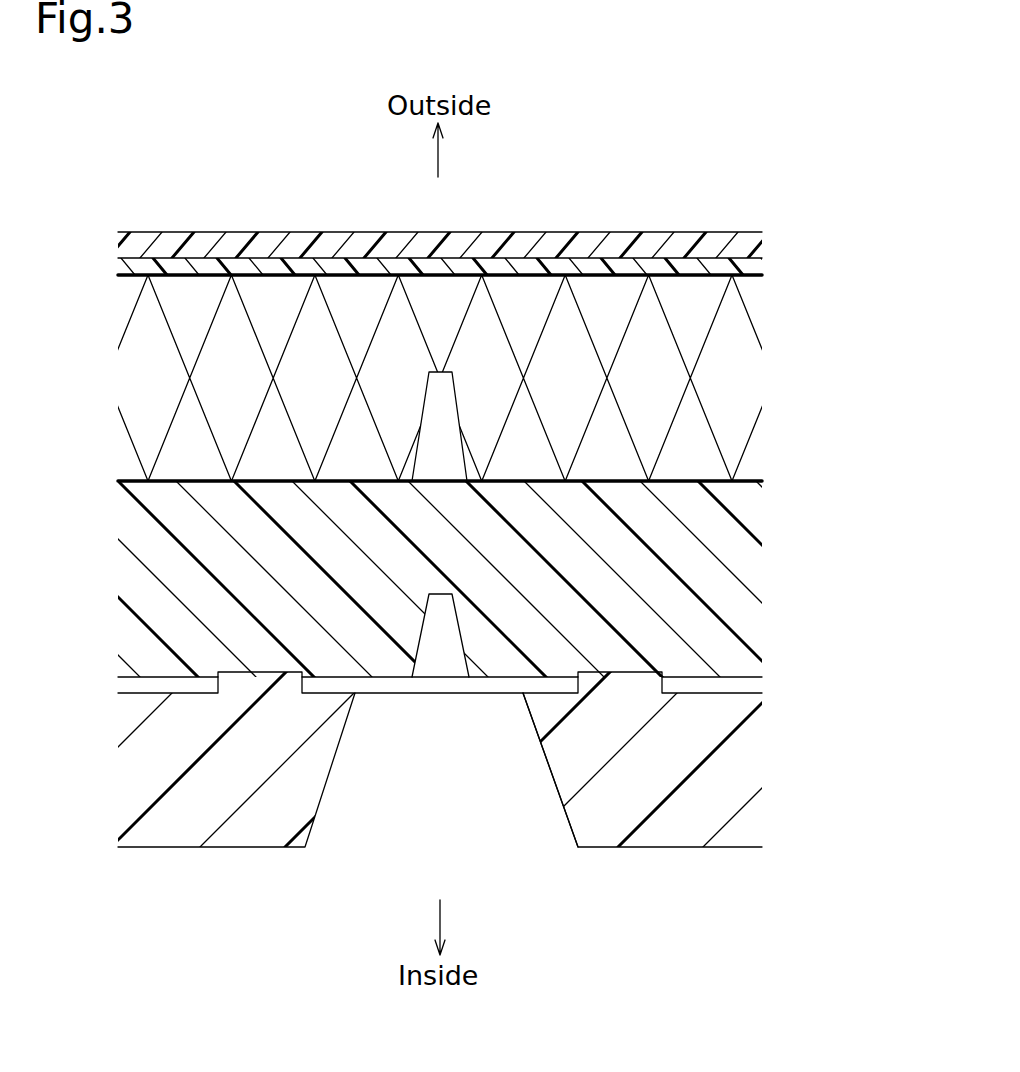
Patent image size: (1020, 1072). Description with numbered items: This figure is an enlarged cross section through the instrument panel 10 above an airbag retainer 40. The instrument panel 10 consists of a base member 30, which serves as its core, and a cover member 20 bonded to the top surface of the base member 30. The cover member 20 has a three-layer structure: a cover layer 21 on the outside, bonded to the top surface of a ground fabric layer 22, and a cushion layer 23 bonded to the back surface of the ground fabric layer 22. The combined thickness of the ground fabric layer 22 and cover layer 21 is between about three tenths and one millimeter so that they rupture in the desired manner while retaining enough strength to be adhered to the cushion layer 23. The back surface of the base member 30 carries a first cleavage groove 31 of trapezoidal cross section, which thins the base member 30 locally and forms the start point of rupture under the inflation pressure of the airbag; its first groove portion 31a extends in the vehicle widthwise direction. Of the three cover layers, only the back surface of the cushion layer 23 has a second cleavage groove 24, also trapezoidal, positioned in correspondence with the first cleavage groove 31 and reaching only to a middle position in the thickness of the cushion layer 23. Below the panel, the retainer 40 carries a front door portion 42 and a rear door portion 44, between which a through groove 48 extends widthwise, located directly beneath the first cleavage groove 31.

The instrument panel 10 is at (688, 210).
The cover member 20 is at (106, 232).
The cover layer 21 is at (750, 240).
The ground fabric layer 22 is at (752, 267).
The cushion layer 23 is at (752, 378).
The second cleavage groove 24 is at (461, 468).
The base member 30 is at (106, 482).
The first cleavage groove 31 is at (440, 701).
The first groove portion 31a is at (428, 653).
The retainer 40 is at (145, 872).
The front door portion 42 is at (218, 847).
The rear door portion 44 is at (652, 847).
The through groove 48 is at (552, 777).